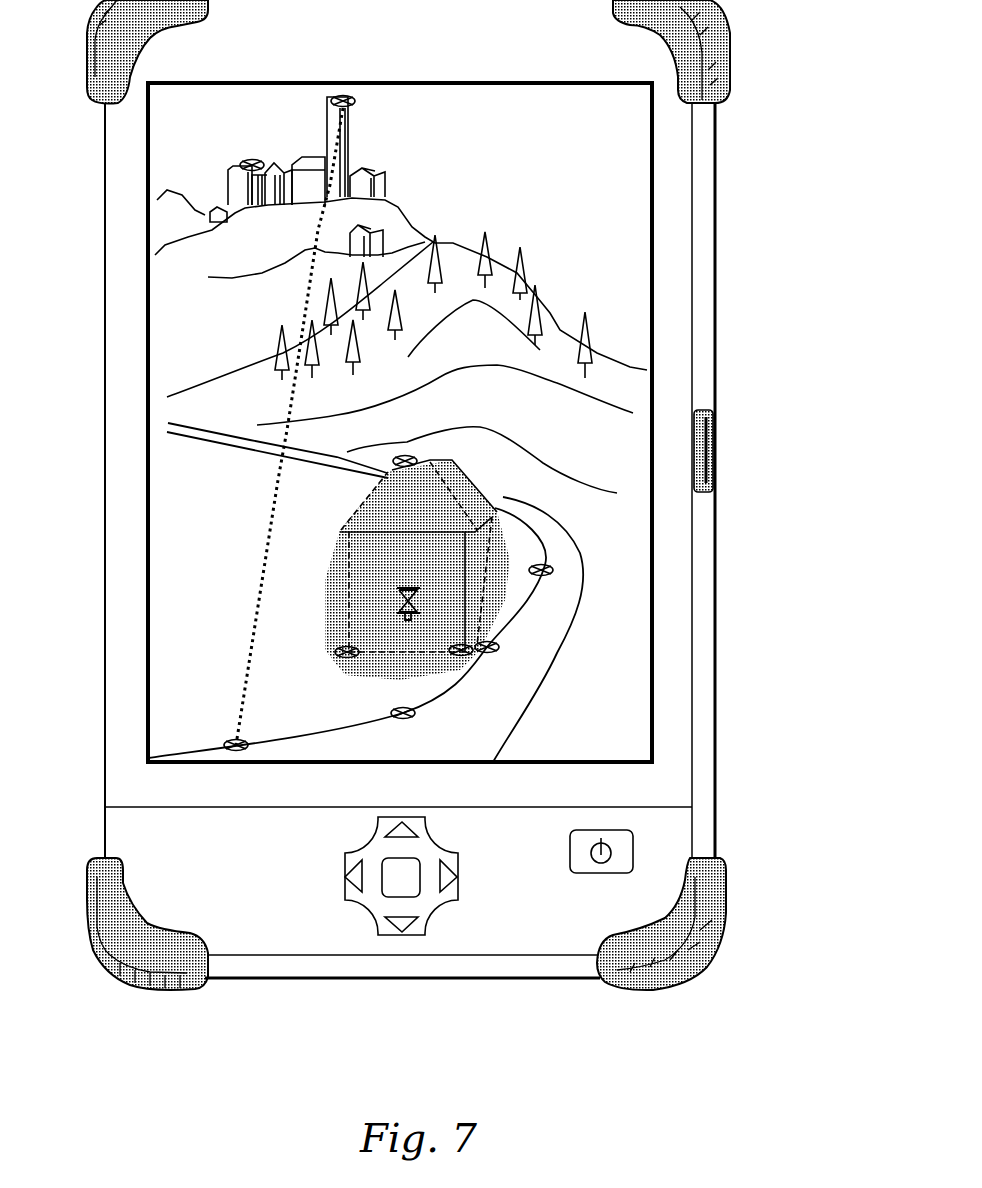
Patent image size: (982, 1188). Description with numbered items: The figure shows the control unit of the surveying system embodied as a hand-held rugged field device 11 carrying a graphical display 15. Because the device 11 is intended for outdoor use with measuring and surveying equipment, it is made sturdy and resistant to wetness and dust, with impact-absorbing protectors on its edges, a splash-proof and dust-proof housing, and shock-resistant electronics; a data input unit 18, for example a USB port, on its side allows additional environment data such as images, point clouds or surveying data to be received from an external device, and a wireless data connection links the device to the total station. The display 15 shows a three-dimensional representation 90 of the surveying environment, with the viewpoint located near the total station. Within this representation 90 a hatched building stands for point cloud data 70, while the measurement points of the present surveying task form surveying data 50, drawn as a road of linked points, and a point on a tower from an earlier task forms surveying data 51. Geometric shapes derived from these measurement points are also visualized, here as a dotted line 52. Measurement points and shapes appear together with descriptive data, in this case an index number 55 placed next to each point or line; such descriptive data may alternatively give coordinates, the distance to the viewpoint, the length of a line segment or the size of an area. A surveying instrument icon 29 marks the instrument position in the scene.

The hand-held rugged field device 11 is at (736, 124).
The graphical display 15 is at (148, 625).
The data input unit 18 is at (707, 470).
The surveying instrument icon 29 is at (414, 612).
The surveying data of the present surveying task 50 is at (393, 744).
The surveying data of a previous surveying task 51 is at (363, 93).
The lines 52 is at (265, 550).
The index number 55 is at (420, 129).
The point cloud data 70 is at (473, 510).
The three-dimensional representation 90 is at (598, 261).